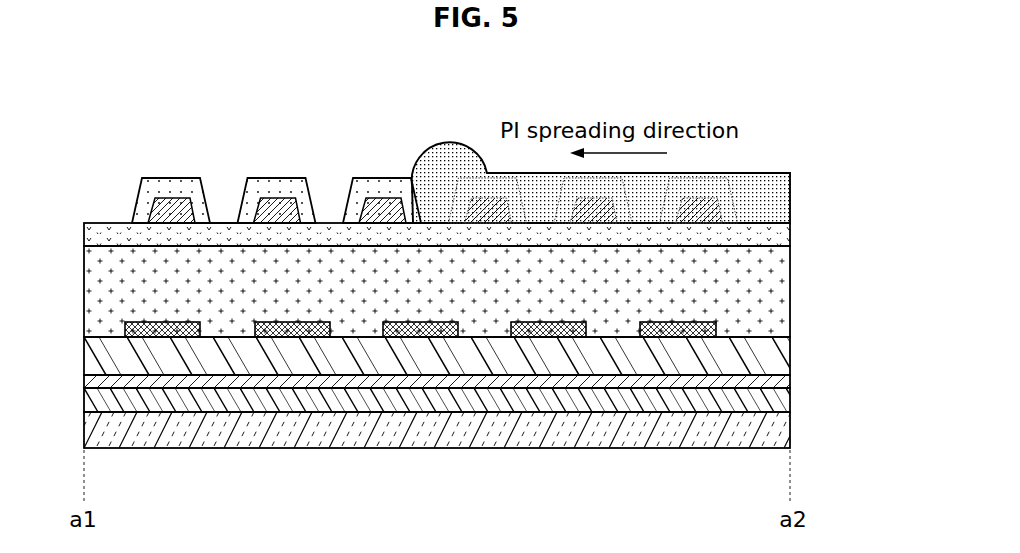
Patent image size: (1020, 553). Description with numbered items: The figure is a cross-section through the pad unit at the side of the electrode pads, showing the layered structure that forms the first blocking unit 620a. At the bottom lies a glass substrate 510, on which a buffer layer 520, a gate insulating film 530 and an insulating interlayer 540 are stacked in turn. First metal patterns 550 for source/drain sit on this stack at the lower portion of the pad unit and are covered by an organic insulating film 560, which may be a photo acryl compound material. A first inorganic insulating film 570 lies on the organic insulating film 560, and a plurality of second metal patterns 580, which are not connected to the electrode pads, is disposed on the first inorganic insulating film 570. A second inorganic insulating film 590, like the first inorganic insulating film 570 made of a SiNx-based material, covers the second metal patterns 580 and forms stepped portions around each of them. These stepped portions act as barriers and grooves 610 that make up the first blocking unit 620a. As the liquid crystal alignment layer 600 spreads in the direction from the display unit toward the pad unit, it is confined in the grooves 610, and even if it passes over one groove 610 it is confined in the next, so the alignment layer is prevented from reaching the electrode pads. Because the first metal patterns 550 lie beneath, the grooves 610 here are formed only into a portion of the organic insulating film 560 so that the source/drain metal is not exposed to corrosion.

The glass substrate 510 is at (785, 430).
The buffer layer 520 is at (785, 398).
The gate insulating film 530 is at (785, 381).
The insulating interlayer 540 is at (783, 358).
The first metal patterns 550 is at (717, 323).
The organic insulating film 560 is at (783, 292).
The first inorganic insulating film 570 is at (783, 236).
The second metal patterns 580 is at (277, 210).
The second inorganic insulating film 590 is at (300, 190).
The liquid crystal alignment layer 600 is at (783, 200).
The grooves 610 is at (225, 203).
The first blocking unit 620a is at (202, 94).